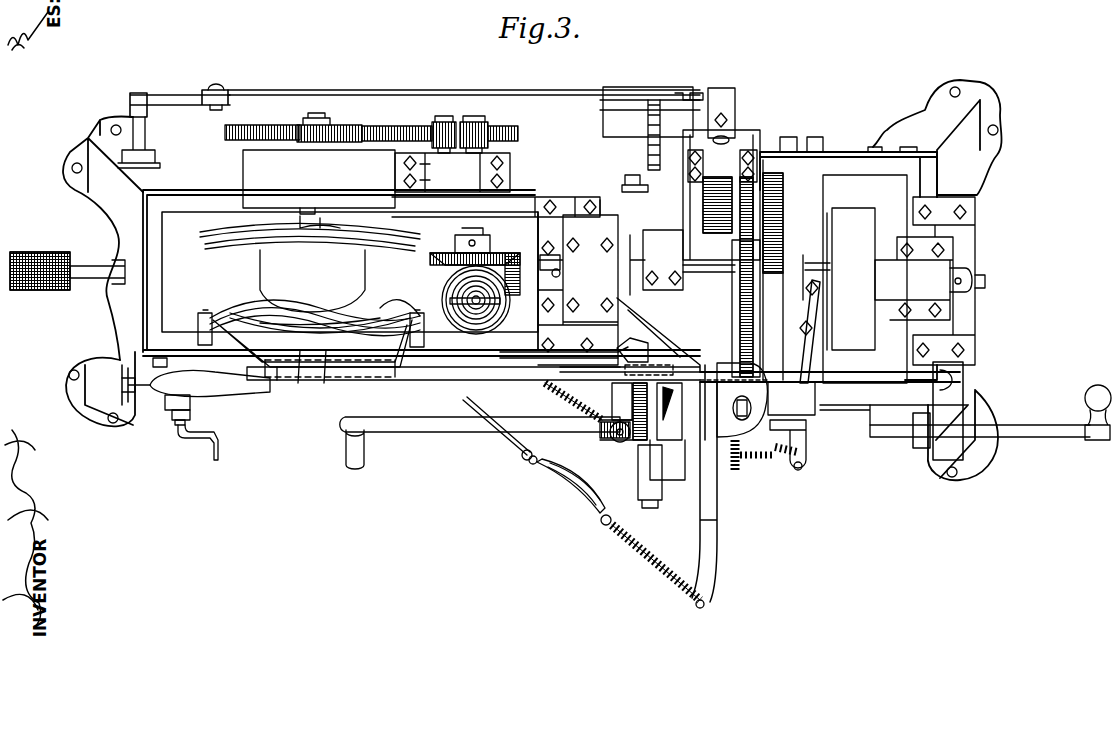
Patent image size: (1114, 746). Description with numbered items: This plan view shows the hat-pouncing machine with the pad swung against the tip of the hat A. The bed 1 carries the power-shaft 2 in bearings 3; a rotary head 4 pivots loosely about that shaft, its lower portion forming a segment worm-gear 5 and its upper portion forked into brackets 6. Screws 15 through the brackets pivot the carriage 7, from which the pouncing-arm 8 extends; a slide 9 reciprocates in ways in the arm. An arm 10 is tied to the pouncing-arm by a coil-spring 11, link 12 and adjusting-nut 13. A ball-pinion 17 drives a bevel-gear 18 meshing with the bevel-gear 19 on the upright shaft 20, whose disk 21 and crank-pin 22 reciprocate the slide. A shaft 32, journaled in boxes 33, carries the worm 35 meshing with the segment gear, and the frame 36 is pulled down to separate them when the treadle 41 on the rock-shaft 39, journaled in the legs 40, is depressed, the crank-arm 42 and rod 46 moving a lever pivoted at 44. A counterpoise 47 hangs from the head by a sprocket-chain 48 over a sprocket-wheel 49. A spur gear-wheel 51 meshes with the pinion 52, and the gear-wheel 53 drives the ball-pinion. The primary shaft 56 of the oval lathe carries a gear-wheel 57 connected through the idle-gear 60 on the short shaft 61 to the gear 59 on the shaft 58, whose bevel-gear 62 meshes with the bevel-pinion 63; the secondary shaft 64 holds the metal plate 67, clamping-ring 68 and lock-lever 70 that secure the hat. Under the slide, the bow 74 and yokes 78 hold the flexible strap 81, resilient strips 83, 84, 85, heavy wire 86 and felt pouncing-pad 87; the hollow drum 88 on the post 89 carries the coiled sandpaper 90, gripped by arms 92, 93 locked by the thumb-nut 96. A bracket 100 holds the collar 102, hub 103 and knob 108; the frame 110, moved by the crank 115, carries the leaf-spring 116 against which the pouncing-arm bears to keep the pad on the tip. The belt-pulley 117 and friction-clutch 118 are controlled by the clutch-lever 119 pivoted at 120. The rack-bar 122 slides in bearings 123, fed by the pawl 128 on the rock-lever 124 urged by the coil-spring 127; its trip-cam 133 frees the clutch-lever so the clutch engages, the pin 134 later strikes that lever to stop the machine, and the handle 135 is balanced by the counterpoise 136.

The bed 1 is at (160, 285).
The power-shaft 2 is at (970, 280).
The bearings 3 is at (578, 290).
The rotary head 4 is at (658, 100).
The segment worm-gear 5 is at (703, 200).
The brackets 6 is at (735, 400).
The carriage 7 is at (791, 398).
The pouncing-arm 8 is at (432, 380).
The slide 9 is at (352, 368).
The arm 10 is at (712, 535).
The coil-spring 11 is at (640, 552).
The link 12 is at (505, 437).
The adjusting-nut 13 is at (560, 485).
The screws 15 is at (733, 448).
The ball-pinion 17 is at (760, 458).
The bevel-gear 18 is at (675, 445).
The bevel-gear 19 is at (635, 440).
The upright shaft 20 is at (652, 490).
The disk 21 is at (649, 360).
The crank-pin 22 is at (632, 350).
The shaft 32 is at (730, 135).
The boxes 33 is at (721, 195).
The worm 35 is at (648, 225).
The frame 36 is at (722, 88).
The rock-shaft 39 is at (146, 148).
The legs 40 is at (118, 203).
The treadle 41 is at (45, 252).
The crank-arm 42 is at (170, 98).
The pivot 44 is at (693, 93).
The rod 46 is at (378, 90).
The counterpoise 47 is at (603, 118).
The sprocket-chain 48 is at (640, 185).
The sprocket-wheel 49 is at (648, 148).
The spur gear-wheel 51 is at (784, 215).
The pinion 52 is at (772, 270).
The gear-wheel 53 is at (715, 290).
The primary shaft of the oval lathe 56 is at (318, 113).
The gear-wheel 57 is at (255, 125).
The shaft 58 is at (478, 116).
The gear 59 is at (505, 126).
The idle-gear 60 is at (405, 126).
The short shaft 61 is at (443, 116).
The bevel-gear 62 is at (458, 253).
The bevel-pinion 63 is at (512, 253).
The secondary shaft of the oval lathe 64 is at (305, 210).
The metal plate 67 is at (205, 244).
The clamping-ring 68 is at (240, 248).
The lock-lever 70 is at (200, 232).
The bow 74 is at (245, 345).
The yokes 78 is at (198, 328).
The flexible strap 81 is at (300, 333).
The flexible resilient strip 83 is at (285, 328).
The flexible resilient strip 84 is at (270, 310).
The flexible resilient strip 85 is at (299, 376).
The heavy wire 86 is at (325, 376).
The pouncing-pad 87 is at (340, 320).
The hollow drum 88 is at (455, 290).
The post 89 is at (455, 280).
The sandpaper 90 is at (398, 310).
The arm 92 is at (500, 306).
The arm 93 is at (450, 301).
The thumb-nut 96 is at (492, 312).
The bracket 100 is at (205, 378).
The collar 102 is at (170, 402).
The hub 103 is at (128, 368).
The knob 108 is at (122, 373).
The frame 110 is at (190, 412).
The crank 115 is at (212, 447).
The leaf-spring 116 is at (178, 422).
The belt-pulley 117 is at (858, 218).
The friction-clutch 118 is at (822, 262).
The clutch-lever 119 is at (808, 368).
The pivot 120 is at (814, 328).
The rack-bar 122 is at (445, 428).
The bearings 123 is at (965, 468).
The rock-lever 124 is at (623, 401).
The coil-spring 127 is at (560, 392).
The spring-actuated pawl 128 is at (612, 438).
The conical-shaped trip-cam 133 is at (915, 447).
The pin 134 is at (806, 440).
The handle 135 is at (364, 460).
The counterpoise 136 is at (1088, 398).